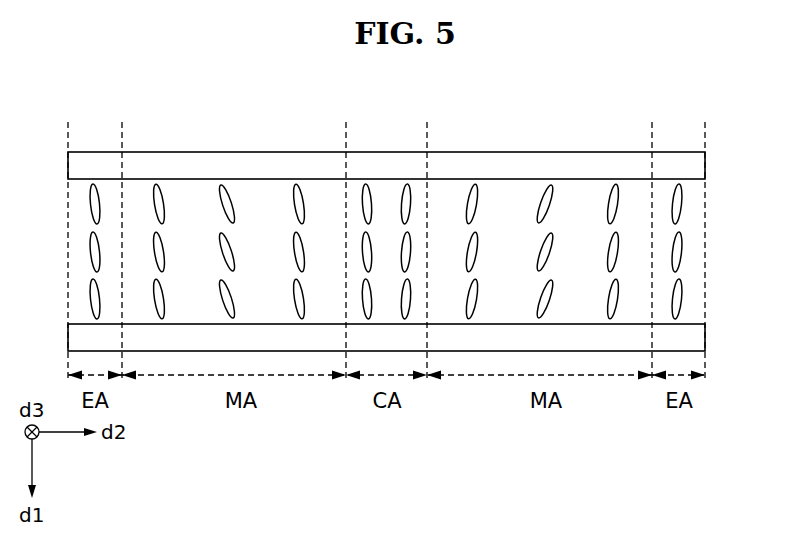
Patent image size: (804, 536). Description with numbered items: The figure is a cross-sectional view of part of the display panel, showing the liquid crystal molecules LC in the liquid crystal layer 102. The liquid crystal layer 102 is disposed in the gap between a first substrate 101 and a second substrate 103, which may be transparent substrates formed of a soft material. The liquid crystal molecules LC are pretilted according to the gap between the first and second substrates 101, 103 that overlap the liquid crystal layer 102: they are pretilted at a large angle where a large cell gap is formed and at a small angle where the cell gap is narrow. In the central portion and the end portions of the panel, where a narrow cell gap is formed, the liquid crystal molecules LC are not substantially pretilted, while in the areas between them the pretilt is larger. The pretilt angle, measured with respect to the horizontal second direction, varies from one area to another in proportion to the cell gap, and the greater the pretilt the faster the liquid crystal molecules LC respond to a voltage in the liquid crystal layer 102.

The first substrate 101 is at (700, 169).
The liquid crystal layer 102 is at (434, 214).
The second substrate 103 is at (698, 340).
The liquid crystal molecules LC is at (405, 200).